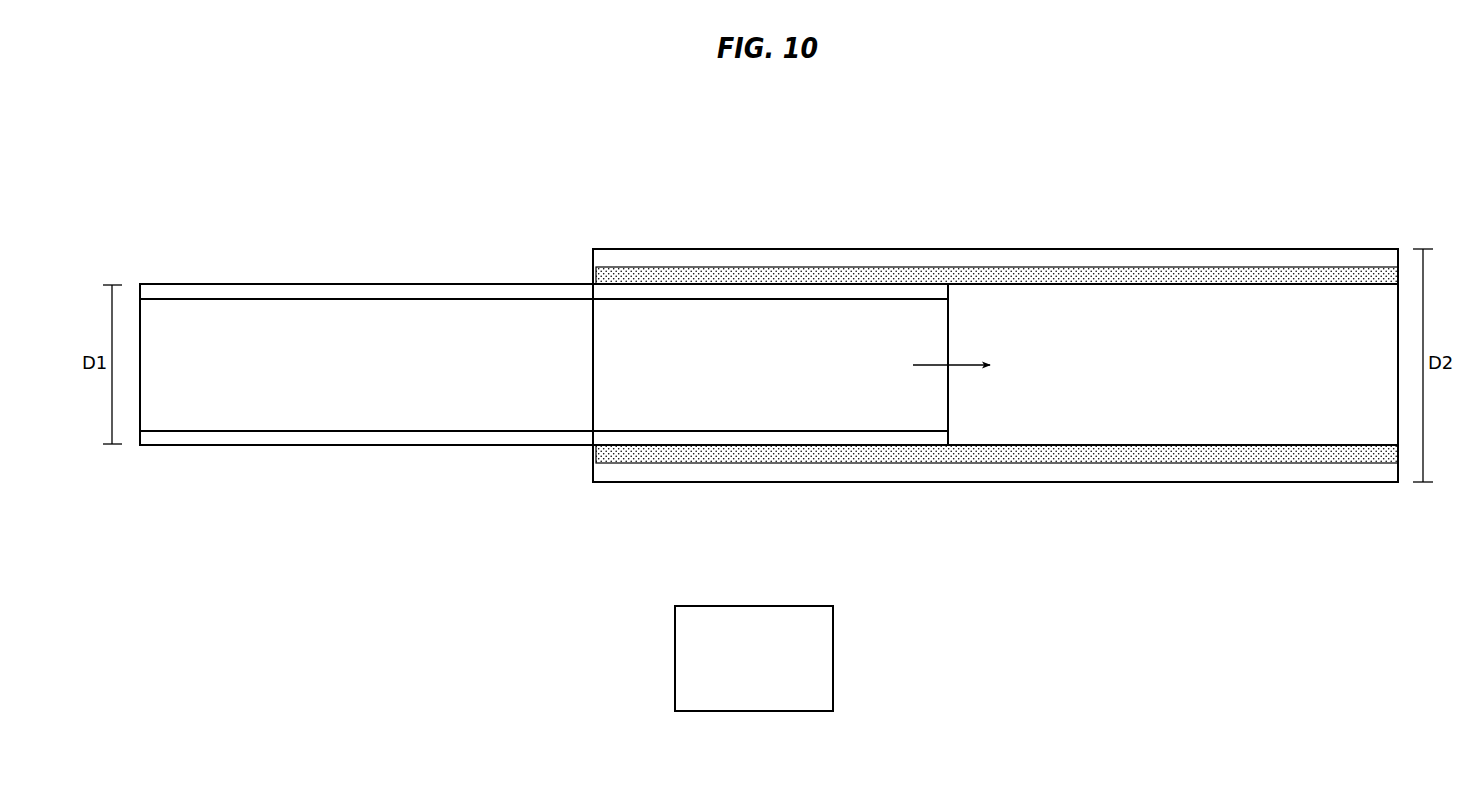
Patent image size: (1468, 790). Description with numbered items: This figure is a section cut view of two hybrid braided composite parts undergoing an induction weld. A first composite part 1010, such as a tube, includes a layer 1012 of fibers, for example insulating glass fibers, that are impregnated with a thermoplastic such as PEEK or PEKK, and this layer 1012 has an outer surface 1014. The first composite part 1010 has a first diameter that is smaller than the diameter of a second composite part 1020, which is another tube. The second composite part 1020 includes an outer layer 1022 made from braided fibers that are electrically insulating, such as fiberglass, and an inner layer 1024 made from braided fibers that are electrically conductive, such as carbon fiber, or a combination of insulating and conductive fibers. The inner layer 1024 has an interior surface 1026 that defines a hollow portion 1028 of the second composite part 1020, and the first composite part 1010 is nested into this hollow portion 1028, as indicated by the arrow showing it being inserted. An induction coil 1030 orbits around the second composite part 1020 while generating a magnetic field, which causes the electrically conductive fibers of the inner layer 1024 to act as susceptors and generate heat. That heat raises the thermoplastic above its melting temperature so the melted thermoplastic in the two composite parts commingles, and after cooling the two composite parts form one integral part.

The first composite part 1010 is at (373, 542).
The layer of fibers 1012 is at (304, 446).
The outer surface 1014 is at (454, 452).
The second composite part 1020 is at (983, 553).
The outer layer 1022 is at (848, 483).
The inner layer 1024 is at (1078, 445).
The interior surface 1026 is at (1183, 442).
The hollow portion 1028 is at (1149, 367).
The induction coil 1030 is at (777, 696).